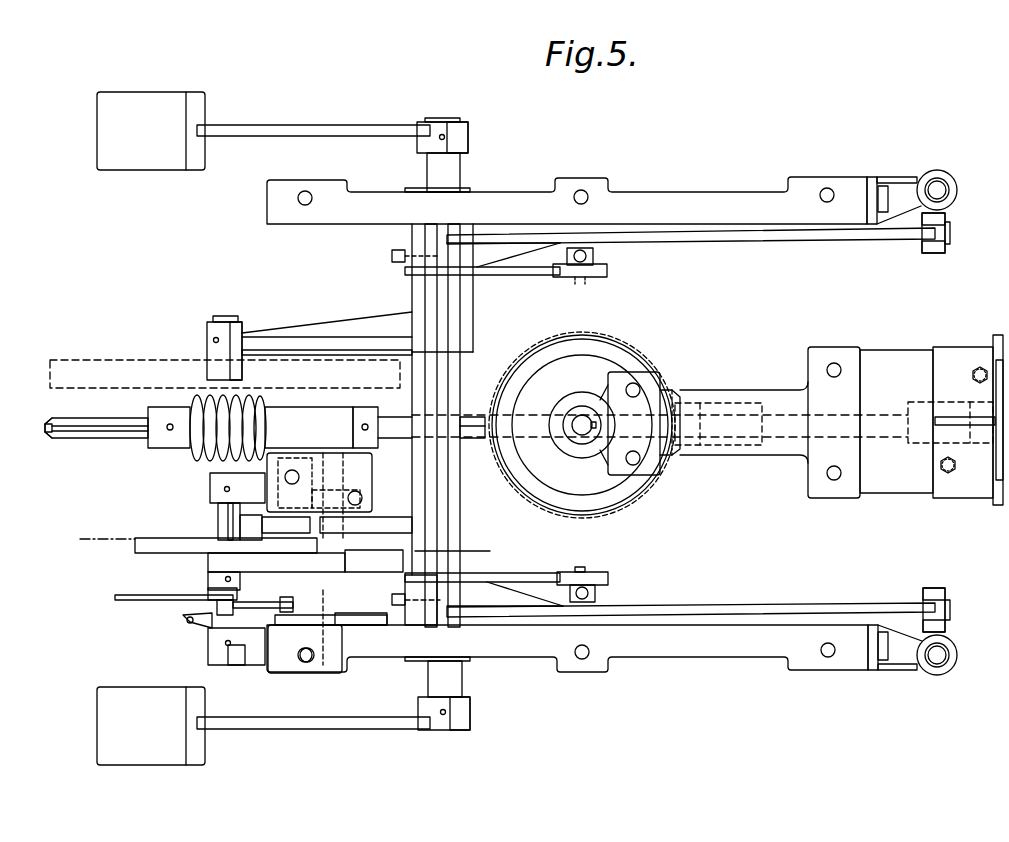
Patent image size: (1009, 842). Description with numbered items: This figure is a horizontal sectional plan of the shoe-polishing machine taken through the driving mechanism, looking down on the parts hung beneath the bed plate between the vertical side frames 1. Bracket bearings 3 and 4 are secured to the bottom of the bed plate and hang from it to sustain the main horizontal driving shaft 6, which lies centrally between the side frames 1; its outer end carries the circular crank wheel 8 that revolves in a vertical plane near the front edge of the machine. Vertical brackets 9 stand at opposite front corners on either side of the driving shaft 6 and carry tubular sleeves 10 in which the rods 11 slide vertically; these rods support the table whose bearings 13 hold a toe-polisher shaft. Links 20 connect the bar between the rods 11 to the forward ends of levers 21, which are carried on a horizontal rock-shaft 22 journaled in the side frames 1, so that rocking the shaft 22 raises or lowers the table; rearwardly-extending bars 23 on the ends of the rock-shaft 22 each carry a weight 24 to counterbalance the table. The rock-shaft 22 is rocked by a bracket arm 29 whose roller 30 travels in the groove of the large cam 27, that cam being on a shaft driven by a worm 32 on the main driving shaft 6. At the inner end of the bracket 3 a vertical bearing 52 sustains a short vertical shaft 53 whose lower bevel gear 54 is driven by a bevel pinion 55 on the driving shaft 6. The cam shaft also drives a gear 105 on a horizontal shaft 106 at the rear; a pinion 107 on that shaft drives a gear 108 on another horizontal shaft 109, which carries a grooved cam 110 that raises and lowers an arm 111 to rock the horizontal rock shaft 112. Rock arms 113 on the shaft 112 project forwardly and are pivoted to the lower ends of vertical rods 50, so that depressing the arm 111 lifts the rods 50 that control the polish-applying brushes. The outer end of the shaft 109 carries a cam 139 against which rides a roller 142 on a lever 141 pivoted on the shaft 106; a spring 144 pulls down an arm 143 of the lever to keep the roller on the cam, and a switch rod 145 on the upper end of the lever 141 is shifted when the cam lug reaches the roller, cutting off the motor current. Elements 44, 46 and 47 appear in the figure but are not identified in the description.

The vertical side frames 1 is at (567, 424).
The bracket bearing 3 is at (795, 452).
The bracket bearing 4 is at (321, 427).
The main horizontal driving shaft 6 is at (102, 430).
The circular crank wheel 8 is at (995, 505).
The vertical brackets 9 is at (876, 176).
The tubular sleeves 10 is at (938, 171).
The rods 11 is at (923, 178).
The bearings 13 is at (281, 547).
The links 20 is at (932, 255).
The levers 21 is at (806, 237).
The rock-shaft 22 is at (458, 173).
The rearwardly-extending bars 23 is at (320, 126).
The weight 24 is at (151, 428).
The cam 27 is at (77, 376).
The bracket arm 29 is at (298, 332).
The roller 30 is at (214, 367).
The worm 32 is at (196, 457).
The bolt 44 is at (955, 478).
The bolt 46 is at (1000, 366).
The slot 47 is at (1000, 402).
The vertical rod 50 is at (596, 254).
The vertical bearing 52 is at (584, 438).
The short vertical shaft 53 is at (576, 419).
The bevel gear 54 is at (648, 494).
The bevel pinion 55 is at (680, 459).
The gear 105 is at (135, 548).
The horizontal shaft 106 is at (218, 515).
The pinion 107 is at (208, 562).
The gear 108 is at (360, 565).
The horizontal shaft 109 is at (325, 666).
The cam 110 is at (412, 530).
The arm 111 is at (366, 540).
The horizontal rock shaft 112 is at (416, 466).
The lever or rock arms 113 is at (548, 271).
The cam 139 is at (370, 624).
The lever 141 is at (217, 606).
The roller 142 is at (272, 621).
The arm 143 is at (187, 619).
The spring 144 is at (205, 630).
The switch rod 145 is at (115, 598).